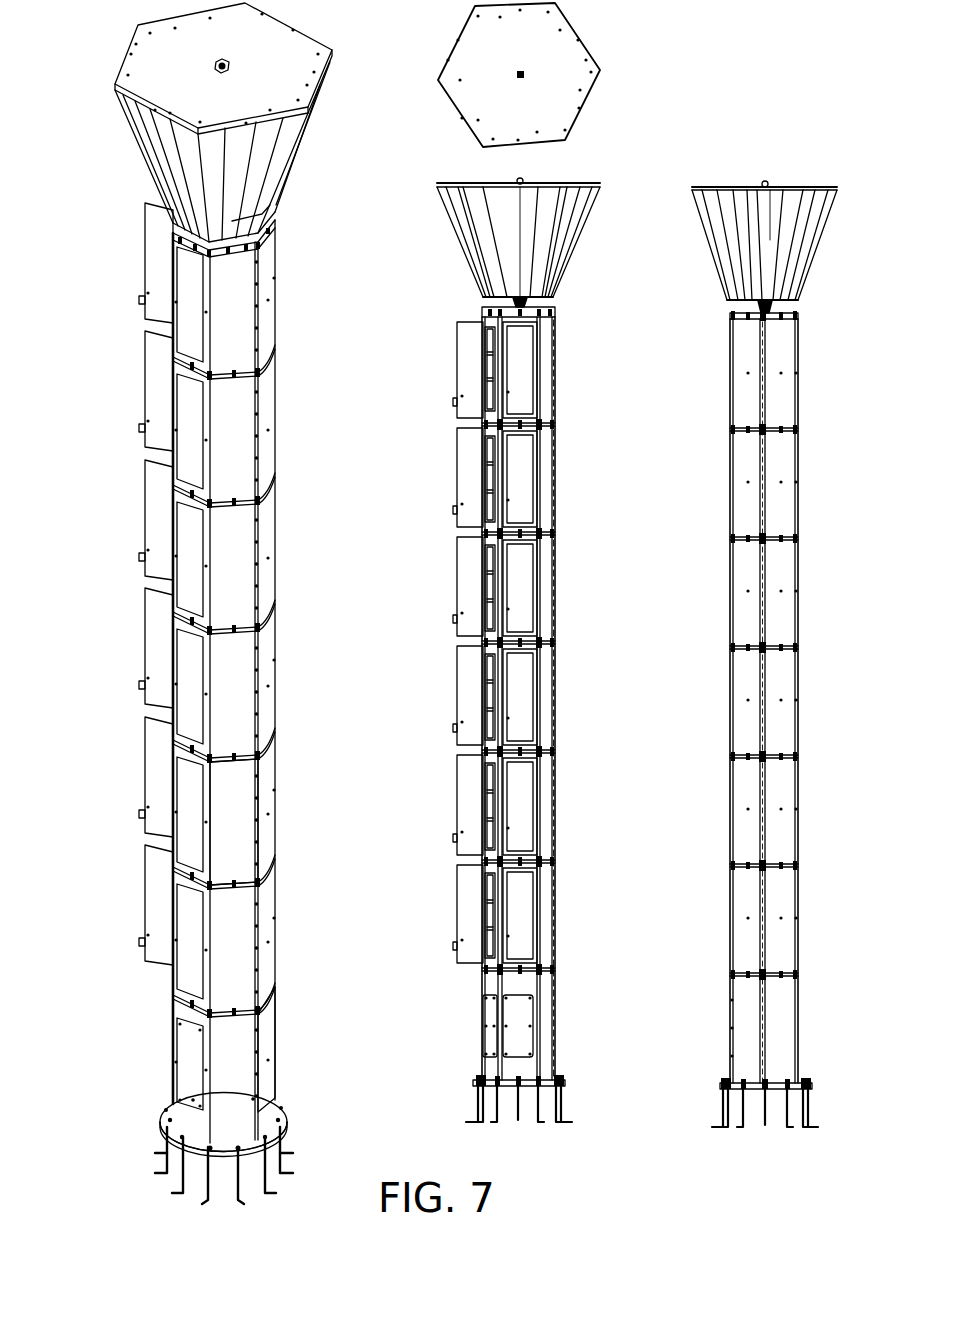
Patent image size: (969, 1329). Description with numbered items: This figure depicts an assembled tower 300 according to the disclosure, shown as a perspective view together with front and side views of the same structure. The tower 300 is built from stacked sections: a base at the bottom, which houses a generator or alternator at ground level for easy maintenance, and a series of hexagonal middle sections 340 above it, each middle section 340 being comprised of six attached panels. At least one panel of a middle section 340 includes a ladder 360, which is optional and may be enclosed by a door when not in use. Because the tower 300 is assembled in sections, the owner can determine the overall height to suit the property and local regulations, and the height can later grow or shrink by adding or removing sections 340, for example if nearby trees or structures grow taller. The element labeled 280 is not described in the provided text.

The access door 280 is at (162, 258).
The tower 300 is at (80, 1033).
The middle section 340 is at (292, 658).
The ladder 360 is at (490, 567).